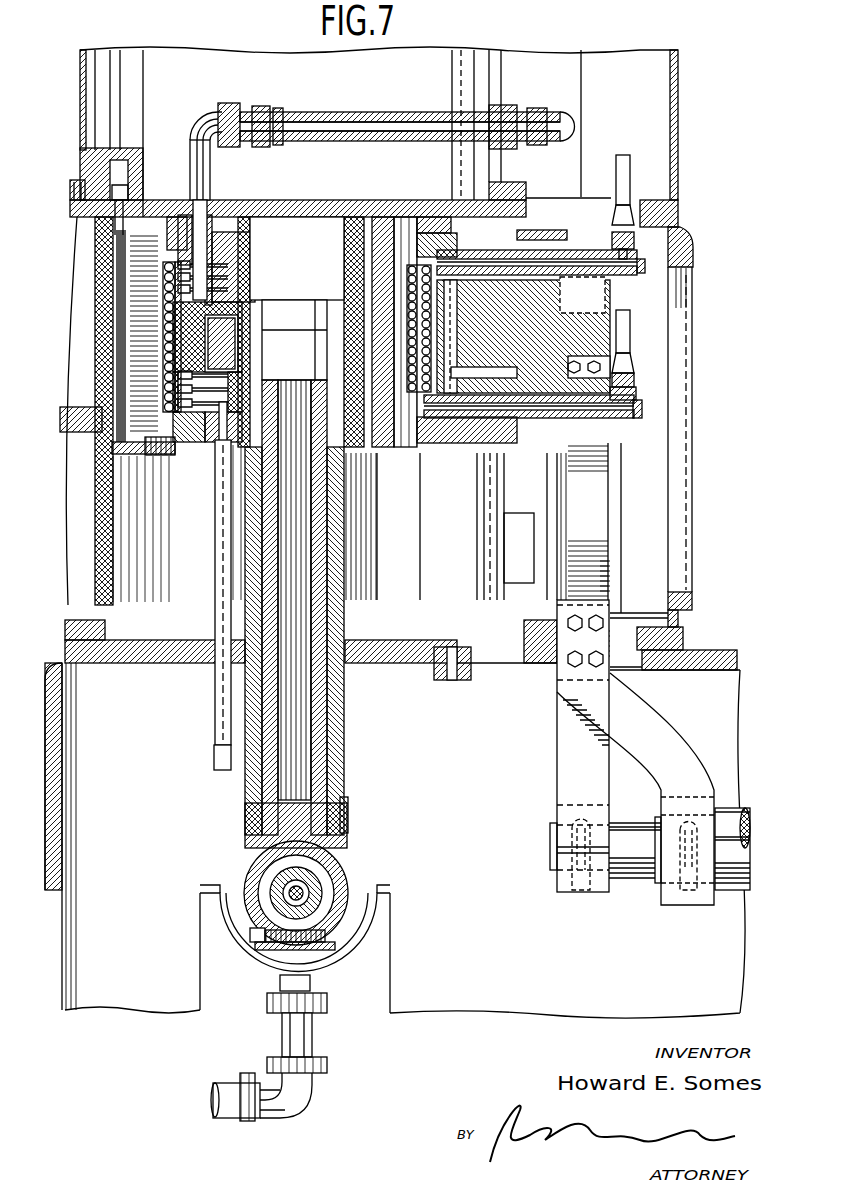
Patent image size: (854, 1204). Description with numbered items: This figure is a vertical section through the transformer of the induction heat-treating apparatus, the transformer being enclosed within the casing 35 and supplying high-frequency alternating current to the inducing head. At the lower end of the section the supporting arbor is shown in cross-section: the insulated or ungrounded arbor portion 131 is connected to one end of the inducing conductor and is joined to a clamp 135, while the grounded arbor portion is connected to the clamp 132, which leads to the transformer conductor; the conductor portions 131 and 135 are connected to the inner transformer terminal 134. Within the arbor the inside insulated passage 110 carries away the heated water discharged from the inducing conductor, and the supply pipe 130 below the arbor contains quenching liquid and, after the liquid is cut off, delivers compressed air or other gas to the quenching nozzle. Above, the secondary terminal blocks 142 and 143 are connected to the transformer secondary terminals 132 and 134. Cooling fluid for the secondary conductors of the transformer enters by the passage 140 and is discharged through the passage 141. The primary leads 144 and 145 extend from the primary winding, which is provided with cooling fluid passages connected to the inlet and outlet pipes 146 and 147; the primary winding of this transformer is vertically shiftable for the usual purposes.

The casing 35 is at (60, 480).
The insulated passage 110 is at (303, 896).
The supply pipe 130 is at (298, 1043).
The insulated arbor portion 131 is at (243, 877).
The clamp 132 is at (346, 807).
The inner transformer terminal 134 is at (332, 760).
The clamp 135 is at (336, 884).
The passage 140 is at (215, 728).
The passage 141 is at (205, 215).
The secondary terminal block 142 is at (262, 258).
The secondary terminal block 143 is at (270, 355).
The primary lead 144 is at (557, 773).
The primary lead 145 is at (665, 748).
The inlet pipe 146 is at (624, 177).
The outlet pipe 147 is at (625, 335).